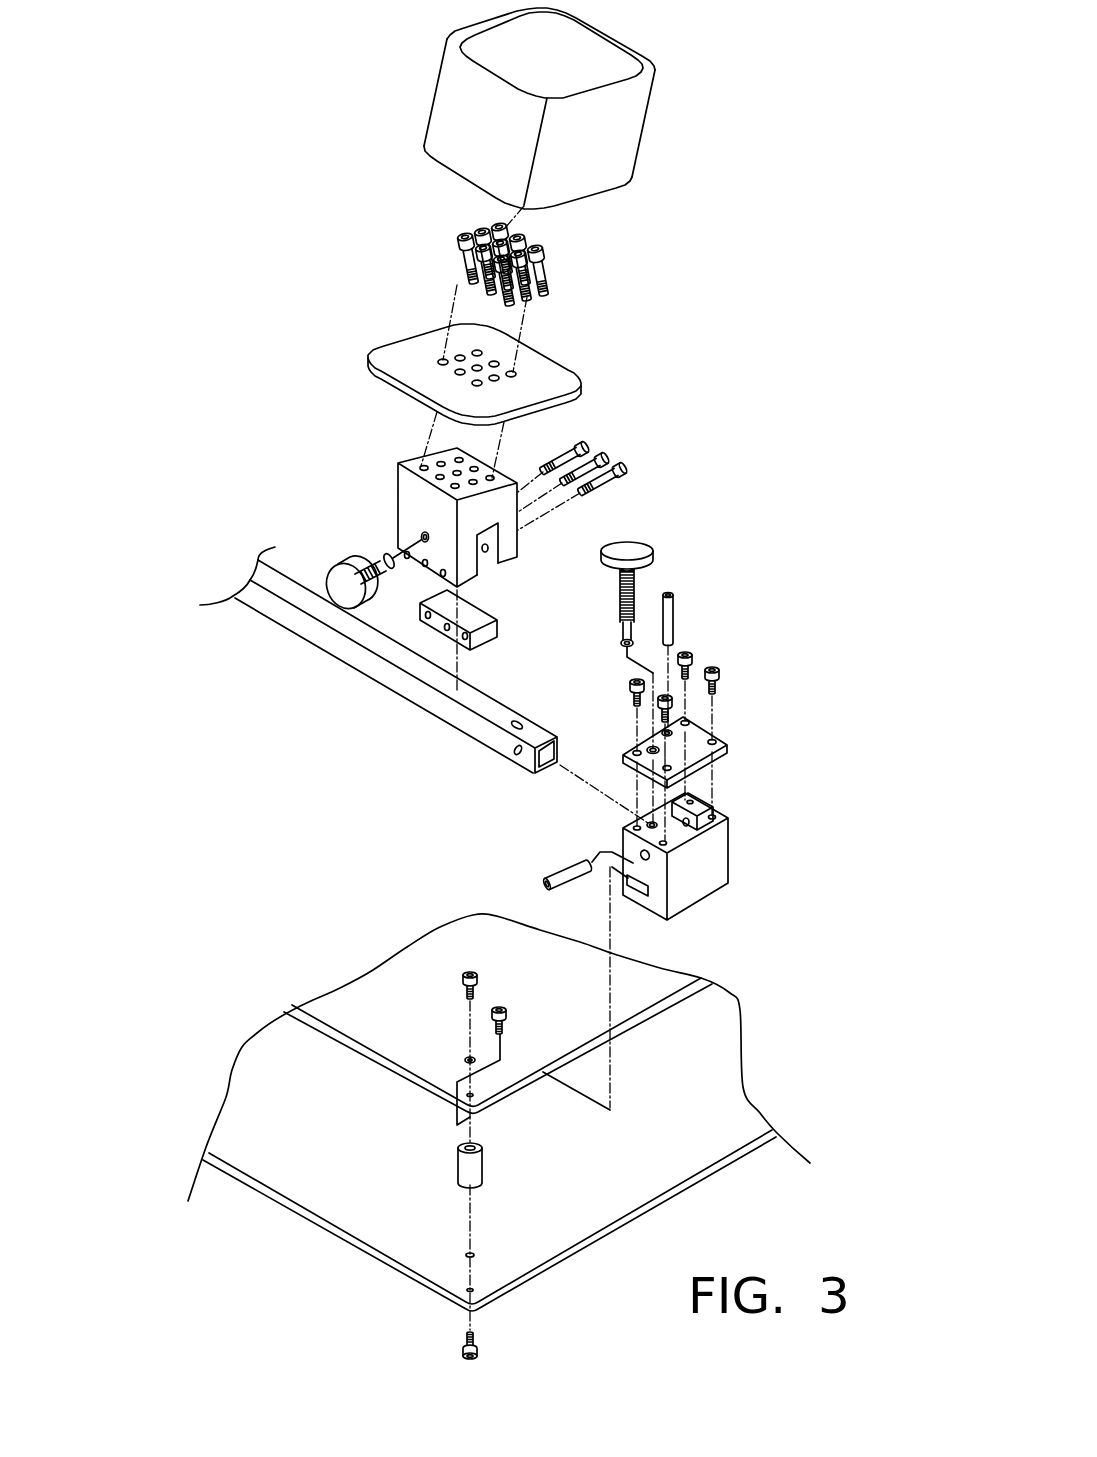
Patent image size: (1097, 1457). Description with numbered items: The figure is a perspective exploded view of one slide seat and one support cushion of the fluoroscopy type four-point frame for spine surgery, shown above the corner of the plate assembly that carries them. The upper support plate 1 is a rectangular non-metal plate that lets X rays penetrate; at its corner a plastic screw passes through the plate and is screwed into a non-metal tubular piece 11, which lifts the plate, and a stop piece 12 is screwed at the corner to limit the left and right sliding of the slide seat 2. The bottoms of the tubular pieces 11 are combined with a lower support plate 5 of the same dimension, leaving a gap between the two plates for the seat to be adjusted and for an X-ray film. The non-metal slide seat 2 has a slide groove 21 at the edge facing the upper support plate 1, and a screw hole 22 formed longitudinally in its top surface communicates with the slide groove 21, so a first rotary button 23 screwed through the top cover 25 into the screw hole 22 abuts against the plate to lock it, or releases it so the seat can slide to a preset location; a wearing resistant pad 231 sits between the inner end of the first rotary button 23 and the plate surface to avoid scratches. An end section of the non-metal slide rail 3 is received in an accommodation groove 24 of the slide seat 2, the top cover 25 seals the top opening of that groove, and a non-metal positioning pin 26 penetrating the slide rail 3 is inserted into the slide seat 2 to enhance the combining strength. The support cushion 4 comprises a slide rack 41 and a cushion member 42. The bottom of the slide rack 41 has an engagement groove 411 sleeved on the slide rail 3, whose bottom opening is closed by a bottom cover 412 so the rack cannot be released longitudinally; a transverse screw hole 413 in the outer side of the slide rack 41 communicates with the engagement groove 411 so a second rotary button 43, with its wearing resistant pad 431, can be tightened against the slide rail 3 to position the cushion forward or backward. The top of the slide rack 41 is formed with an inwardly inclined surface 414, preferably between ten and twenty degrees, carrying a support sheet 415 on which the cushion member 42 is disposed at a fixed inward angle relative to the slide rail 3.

The upper support plate 1 is at (409, 992).
The slide seat 2 is at (720, 847).
The slide rail 3 is at (397, 683).
The support cushion 4 is at (657, 90).
The lower support plate 5 is at (313, 1176).
The tubular piece 11 is at (480, 1167).
The stop piece 12 is at (510, 1005).
The slide groove 21 is at (637, 883).
The screw hole 22 is at (652, 825).
The first rotary button 23 is at (640, 553).
The accommodation groove 24 is at (680, 818).
The top cover 25 is at (703, 733).
The positioning pin 26 is at (568, 870).
The slide rack 41 is at (508, 520).
The cushion member 42 is at (462, 112).
The second rotary button 43 is at (337, 570).
The wearing resistant pad 231 is at (620, 643).
The engagement groove 411 is at (485, 563).
The bottom cover 412 is at (477, 617).
The screw hole 413 is at (420, 537).
The inclined surface 414 is at (422, 466).
The support sheet 415 is at (545, 368).
The wearing resistant pad 431 is at (385, 555).